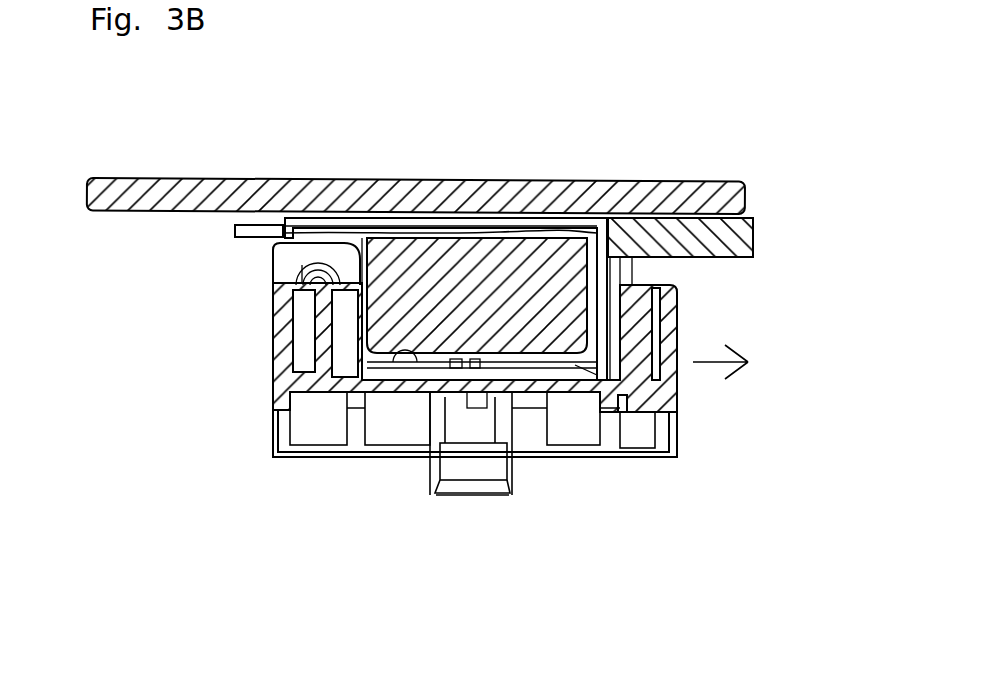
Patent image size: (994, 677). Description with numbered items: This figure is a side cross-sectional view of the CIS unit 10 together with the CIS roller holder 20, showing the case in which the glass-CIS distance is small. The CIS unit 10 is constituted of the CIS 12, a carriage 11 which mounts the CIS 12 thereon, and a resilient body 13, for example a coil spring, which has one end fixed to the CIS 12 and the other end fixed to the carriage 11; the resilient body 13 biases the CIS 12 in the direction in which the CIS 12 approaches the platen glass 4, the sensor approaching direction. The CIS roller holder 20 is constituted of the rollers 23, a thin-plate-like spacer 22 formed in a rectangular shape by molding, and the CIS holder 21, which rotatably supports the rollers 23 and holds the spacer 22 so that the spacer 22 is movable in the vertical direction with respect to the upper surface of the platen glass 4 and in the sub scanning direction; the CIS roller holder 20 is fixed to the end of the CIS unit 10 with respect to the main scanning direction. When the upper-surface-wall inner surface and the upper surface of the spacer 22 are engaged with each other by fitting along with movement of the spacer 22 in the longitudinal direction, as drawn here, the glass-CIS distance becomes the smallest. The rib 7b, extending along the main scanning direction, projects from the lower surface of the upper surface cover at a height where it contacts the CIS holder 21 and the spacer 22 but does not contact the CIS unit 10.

The platen glass 4 is at (413, 192).
The rib 7b is at (722, 240).
The CIS unit 10 is at (202, 382).
The carriage 11 is at (402, 390).
The CIS 12 is at (527, 335).
The resilient body 13 is at (505, 364).
The CIS roller holder 20 is at (541, 228).
The CIS holder 21 is at (285, 238).
The spacer 22 is at (240, 223).
The rollers 23 is at (330, 216).